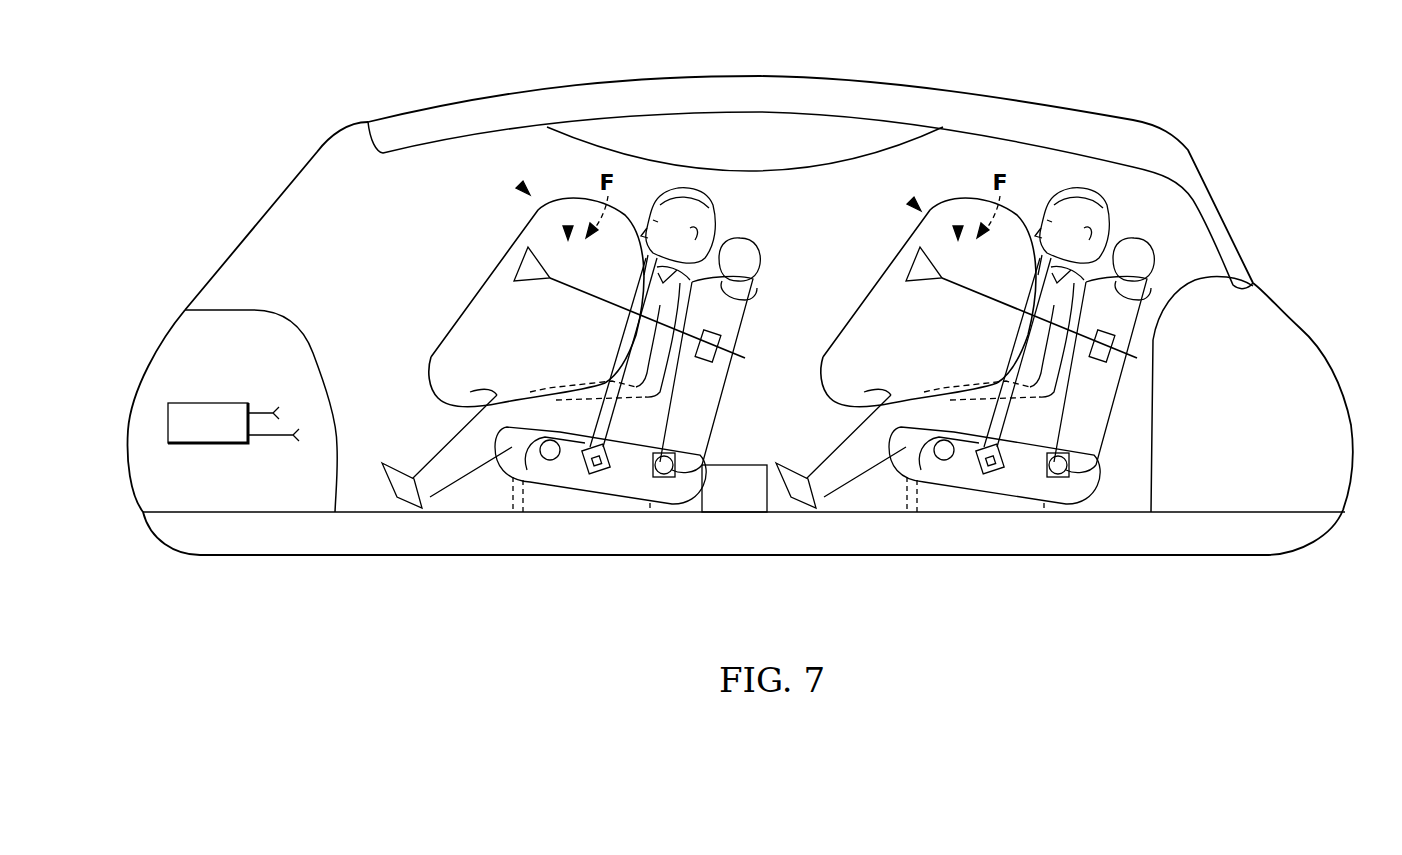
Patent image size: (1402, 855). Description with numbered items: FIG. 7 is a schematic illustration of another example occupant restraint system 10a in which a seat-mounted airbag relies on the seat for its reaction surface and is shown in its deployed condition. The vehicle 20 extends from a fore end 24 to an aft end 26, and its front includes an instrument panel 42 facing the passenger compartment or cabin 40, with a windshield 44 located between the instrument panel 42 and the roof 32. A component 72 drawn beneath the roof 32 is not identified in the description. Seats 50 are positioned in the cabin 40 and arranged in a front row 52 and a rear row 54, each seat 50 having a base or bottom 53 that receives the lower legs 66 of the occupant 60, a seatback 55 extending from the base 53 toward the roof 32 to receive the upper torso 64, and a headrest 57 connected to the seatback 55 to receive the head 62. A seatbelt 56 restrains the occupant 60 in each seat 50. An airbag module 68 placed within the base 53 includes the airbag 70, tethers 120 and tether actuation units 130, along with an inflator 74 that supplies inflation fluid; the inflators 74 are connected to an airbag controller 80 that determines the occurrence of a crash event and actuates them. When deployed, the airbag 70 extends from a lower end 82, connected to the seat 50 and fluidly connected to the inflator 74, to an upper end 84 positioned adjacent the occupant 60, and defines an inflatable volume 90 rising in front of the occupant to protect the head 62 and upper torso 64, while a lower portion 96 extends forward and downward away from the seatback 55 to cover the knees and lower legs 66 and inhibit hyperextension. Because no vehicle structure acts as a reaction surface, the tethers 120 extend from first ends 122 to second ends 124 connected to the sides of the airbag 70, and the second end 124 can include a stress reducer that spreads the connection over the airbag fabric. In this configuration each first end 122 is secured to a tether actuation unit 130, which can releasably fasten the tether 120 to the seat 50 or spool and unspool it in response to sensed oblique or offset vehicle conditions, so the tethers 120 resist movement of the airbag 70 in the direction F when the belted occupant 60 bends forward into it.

The occupant restraint system 10a is at (540, 530).
The vehicle 20 is at (200, 252).
The first or fore end 24 is at (154, 308).
The second or aft end 26 is at (1312, 278).
The roof 32 is at (760, 76).
The passenger compartment or cabin 40 is at (803, 281).
The instrument panel 42 is at (288, 323).
The windshield or windscreen 44 is at (285, 190).
The seat 50 is at (703, 400).
The front row 52 is at (633, 530).
The seat base or bottom 53 is at (517, 437).
The rear row 54 is at (1032, 530).
The seatback 55 is at (713, 377).
The seatbelt 56 is at (630, 352).
The headrest 57 is at (743, 257).
The occupant 60 is at (637, 413).
The head 62 is at (700, 217).
The upper torso 64 is at (673, 300).
The lower legs/lap/knees 66 is at (500, 407).
The airbag module 68 is at (567, 484).
The airbag 70 is at (568, 228).
The overhead console 72 is at (822, 170).
The inflator 74 is at (537, 452).
The airbag controller 80 is at (210, 413).
The lower end 82 is at (535, 474).
The upper end 84 is at (526, 190).
The inflatable volume 90 is at (478, 305).
The lower portion 96 is at (447, 383).
The tethers 120 is at (586, 300).
The first ends 122 is at (717, 350).
The second ends 124 is at (513, 263).
The tether actuation units 130 is at (735, 335).